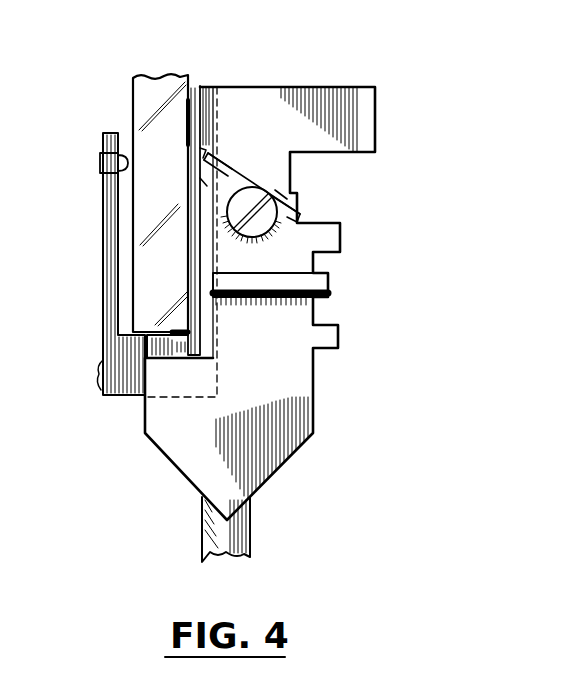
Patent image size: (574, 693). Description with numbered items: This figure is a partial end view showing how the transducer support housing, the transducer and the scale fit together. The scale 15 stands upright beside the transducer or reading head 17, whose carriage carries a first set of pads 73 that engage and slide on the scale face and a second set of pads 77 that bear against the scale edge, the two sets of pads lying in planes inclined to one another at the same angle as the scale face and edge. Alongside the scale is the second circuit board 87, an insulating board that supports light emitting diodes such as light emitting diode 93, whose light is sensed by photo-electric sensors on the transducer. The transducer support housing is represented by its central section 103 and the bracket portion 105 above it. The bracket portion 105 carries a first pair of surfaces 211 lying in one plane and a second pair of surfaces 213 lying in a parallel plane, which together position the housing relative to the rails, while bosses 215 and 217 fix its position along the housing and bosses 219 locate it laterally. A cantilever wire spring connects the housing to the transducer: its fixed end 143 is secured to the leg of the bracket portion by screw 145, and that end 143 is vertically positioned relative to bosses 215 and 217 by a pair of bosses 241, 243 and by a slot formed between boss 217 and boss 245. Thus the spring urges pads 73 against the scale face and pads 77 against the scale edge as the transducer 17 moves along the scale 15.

The scale 15 is at (158, 66).
The transducer or reading head 17 is at (125, 398).
The first set of pads 73 is at (200, 88).
The second set of pads 77 is at (165, 343).
The second circuit board 87 is at (103, 265).
The light emitting diode 93 is at (100, 161).
The central section 103 is at (252, 535).
The bracket portion 105 is at (262, 392).
The end of spring 143 is at (243, 178).
The screw 145 is at (262, 240).
The first pair of surfaces 211 is at (315, 312).
The second pair of surfaces 213 is at (376, 122).
The boss 215 is at (341, 345).
The boss 217 is at (341, 240).
The bosses 219 is at (330, 288).
The boss 241 is at (206, 183).
The boss 243 is at (198, 150).
The boss 245 is at (298, 210).